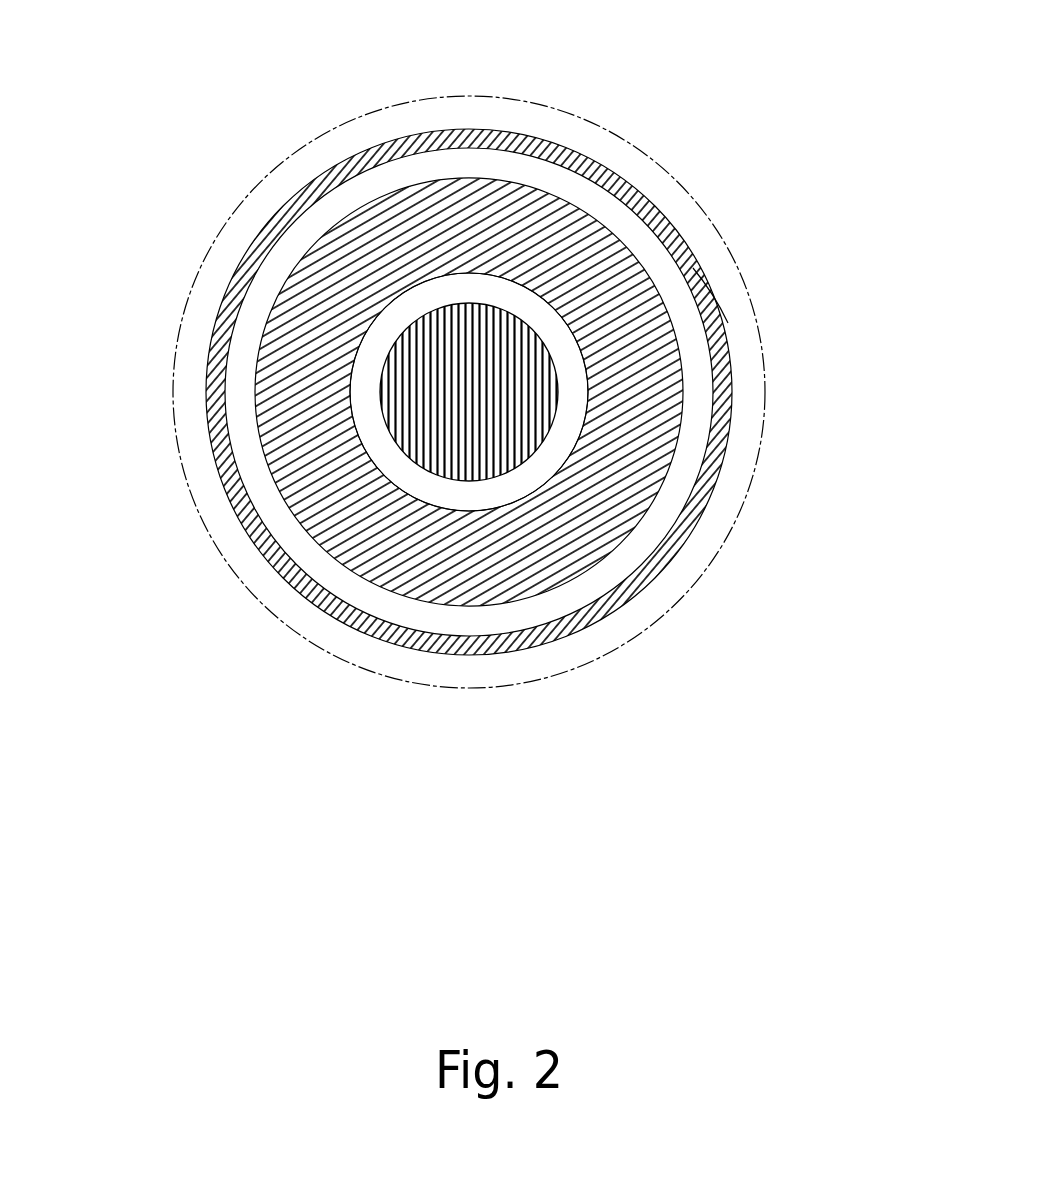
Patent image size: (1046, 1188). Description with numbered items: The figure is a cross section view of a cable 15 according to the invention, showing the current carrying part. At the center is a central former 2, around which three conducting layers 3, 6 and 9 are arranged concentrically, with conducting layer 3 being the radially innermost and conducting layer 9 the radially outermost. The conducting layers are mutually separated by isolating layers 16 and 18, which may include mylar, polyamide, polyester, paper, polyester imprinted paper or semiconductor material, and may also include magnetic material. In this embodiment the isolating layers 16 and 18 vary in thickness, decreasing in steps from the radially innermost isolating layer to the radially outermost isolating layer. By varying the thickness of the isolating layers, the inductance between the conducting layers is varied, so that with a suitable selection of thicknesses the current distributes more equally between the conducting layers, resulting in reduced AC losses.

The cable 15 is at (660, 59).
The conducting layer 9 is at (193, 375).
The isolating layer 18 is at (256, 253).
The conducting layer 6 is at (688, 273).
The isolating layer 16 is at (357, 533).
The conducting layer 3 is at (567, 390).
The central former 2 is at (498, 405).